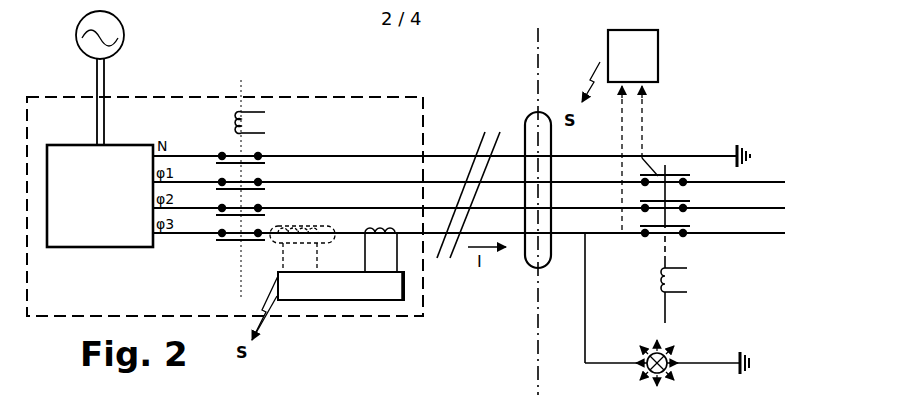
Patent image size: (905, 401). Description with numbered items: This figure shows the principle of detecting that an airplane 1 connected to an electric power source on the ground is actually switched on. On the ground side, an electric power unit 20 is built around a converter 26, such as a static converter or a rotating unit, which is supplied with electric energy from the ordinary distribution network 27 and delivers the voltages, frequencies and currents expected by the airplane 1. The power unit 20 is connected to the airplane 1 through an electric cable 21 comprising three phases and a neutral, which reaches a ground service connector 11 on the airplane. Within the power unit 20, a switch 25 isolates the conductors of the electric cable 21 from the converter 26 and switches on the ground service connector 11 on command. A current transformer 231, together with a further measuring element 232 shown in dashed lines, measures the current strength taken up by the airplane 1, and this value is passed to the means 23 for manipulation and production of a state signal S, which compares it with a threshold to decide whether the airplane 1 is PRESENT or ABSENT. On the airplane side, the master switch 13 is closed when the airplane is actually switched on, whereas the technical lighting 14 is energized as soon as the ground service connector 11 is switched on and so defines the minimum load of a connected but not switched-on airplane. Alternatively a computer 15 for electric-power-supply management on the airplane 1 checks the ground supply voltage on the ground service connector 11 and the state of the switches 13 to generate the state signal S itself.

The airplane 1 is at (526, 334).
The ground service connector 11 is at (535, 110).
The master switch 13 is at (667, 257).
The technical lighting 14 is at (665, 322).
The computer for electric-power-supply management 15 is at (659, 54).
The electric power unit 20 is at (152, 96).
The electric cable 21 is at (449, 138).
The means for manipulation and production of a state signal 23 is at (352, 297).
The switch 25 is at (243, 142).
The converter 26 is at (84, 250).
The ordinary distribution network 27 is at (124, 35).
The current transformer 231 is at (386, 240).
The optional coil / sensor 232 is at (285, 246).